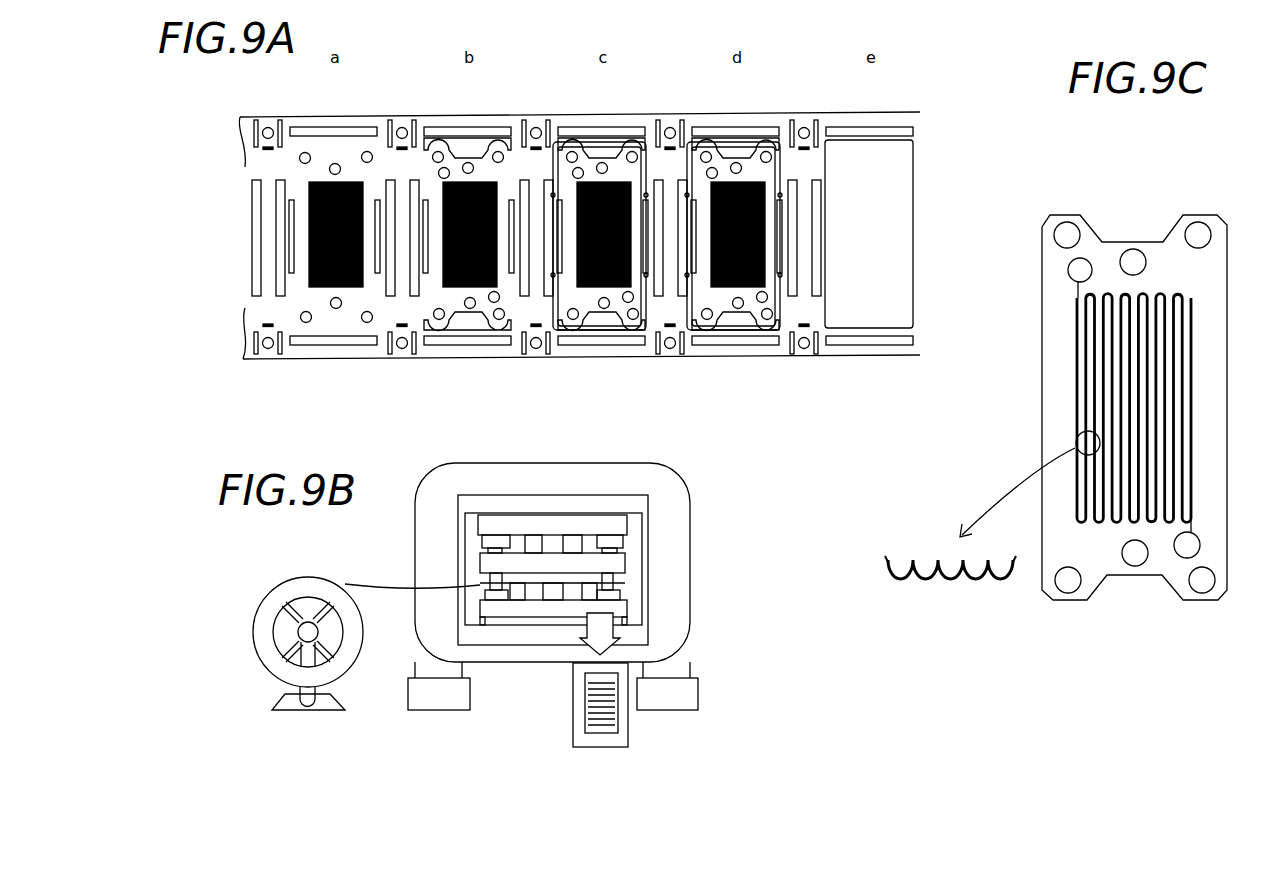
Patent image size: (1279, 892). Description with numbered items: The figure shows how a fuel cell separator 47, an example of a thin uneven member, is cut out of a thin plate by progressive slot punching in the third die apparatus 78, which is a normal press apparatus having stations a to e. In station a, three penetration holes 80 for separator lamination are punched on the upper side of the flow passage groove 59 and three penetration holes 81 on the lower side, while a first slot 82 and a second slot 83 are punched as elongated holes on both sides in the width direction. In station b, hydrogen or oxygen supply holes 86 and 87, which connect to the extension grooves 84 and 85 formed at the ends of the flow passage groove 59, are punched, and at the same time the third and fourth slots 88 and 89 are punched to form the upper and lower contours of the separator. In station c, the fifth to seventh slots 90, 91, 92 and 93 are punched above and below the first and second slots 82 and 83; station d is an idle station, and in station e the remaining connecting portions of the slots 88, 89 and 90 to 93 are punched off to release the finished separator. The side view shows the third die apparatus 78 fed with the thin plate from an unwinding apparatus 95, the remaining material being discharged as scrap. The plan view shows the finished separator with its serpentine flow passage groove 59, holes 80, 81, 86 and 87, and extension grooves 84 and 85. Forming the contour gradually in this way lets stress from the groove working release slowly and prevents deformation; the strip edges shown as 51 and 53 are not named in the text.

In FIG. 9B, the fuel cell separator 47 is at (612, 722).
In FIG. 9C, the fuel cell separator 47 is at (1186, 198).
In FIG. 9A, the upper carrier rail 51 is at (266, 126).
In FIG. 9A, the lower carrier rail 53 is at (267, 349).
In FIG. 9A, the flow passage groove 59 is at (348, 180).
In FIG. 9C, the flow passage groove 59 is at (1193, 392).
In FIG. 9B, the third die apparatus 78 is at (660, 500).
In FIG. 9A, the penetration holes 80 is at (333, 163).
In FIG. 9C, the penetration holes 80 is at (1132, 260).
In FIG. 9A, the penetration holes 81 is at (336, 309).
In FIG. 9C, the penetration holes 81 is at (1068, 591).
In FIG. 9A, the first slot 82 is at (298, 252).
In FIG. 9A, the second slot 83 is at (372, 237).
In FIG. 9A, the extension groove 84 is at (443, 167).
In FIG. 9C, the extension groove 84 is at (1077, 291).
In FIG. 9A, the extension groove 85 is at (498, 303).
In FIG. 9C, the extension groove 85 is at (1188, 533).
In FIG. 9A, the hydrogen or oxygen supply hole 86 is at (468, 162).
In FIG. 9C, the hydrogen or oxygen supply hole 86 is at (1075, 268).
In FIG. 9A, the hydrogen or oxygen supply hole 87 is at (473, 346).
In FIG. 9C, the hydrogen or oxygen supply hole 87 is at (1197, 552).
In FIG. 9A, the third slot 88 is at (486, 148).
In FIG. 9A, the fourth slot 89 is at (447, 331).
In FIG. 9A, the fifth slot 90 is at (630, 150).
In FIG. 9A, the sixth slot 91 is at (573, 150).
In FIG. 9A, the seventh slot 92 is at (632, 320).
In FIG. 9A, the seventh slot 93 is at (575, 320).
In FIG. 9B, the unwinding apparatus 95 is at (356, 660).